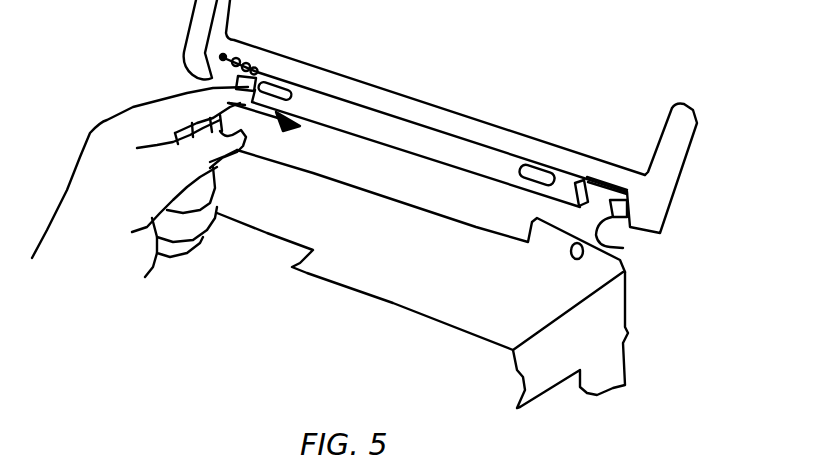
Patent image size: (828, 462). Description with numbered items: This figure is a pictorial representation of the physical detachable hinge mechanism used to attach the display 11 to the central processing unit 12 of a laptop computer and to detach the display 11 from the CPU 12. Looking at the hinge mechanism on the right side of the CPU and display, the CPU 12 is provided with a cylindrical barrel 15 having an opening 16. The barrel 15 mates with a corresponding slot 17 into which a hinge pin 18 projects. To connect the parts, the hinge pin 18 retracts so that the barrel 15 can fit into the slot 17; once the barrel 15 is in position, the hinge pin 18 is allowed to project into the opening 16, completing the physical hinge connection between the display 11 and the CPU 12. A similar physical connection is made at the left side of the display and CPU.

The display 11 is at (688, 156).
The central processing unit 12 is at (630, 340).
The cylindrical barrel 15 is at (523, 226).
The opening 16 is at (573, 259).
The slot 17 is at (603, 177).
The hinge pin 18 is at (629, 238).